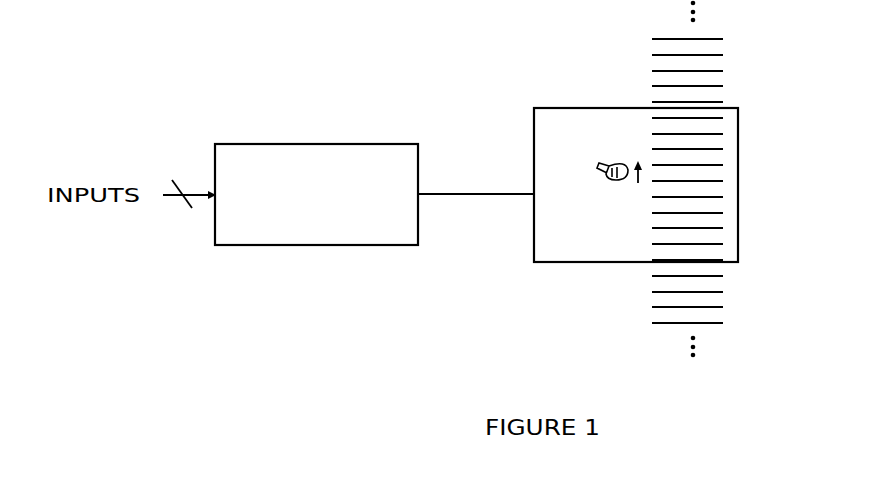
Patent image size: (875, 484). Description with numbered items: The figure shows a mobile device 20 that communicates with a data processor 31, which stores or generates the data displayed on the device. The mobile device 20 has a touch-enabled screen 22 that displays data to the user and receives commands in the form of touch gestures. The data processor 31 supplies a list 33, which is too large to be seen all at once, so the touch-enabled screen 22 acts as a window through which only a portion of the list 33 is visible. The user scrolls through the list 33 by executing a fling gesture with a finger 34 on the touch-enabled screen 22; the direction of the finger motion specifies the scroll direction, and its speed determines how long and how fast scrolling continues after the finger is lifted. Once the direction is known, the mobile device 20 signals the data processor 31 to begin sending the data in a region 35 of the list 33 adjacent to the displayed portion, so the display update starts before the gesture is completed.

The mobile device 20 is at (511, 74).
The touch-enabled screen 22 is at (533, 140).
The data processor 31 is at (282, 245).
The list 33 is at (802, 42).
The finger 34 is at (608, 182).
The region 35 is at (745, 263).